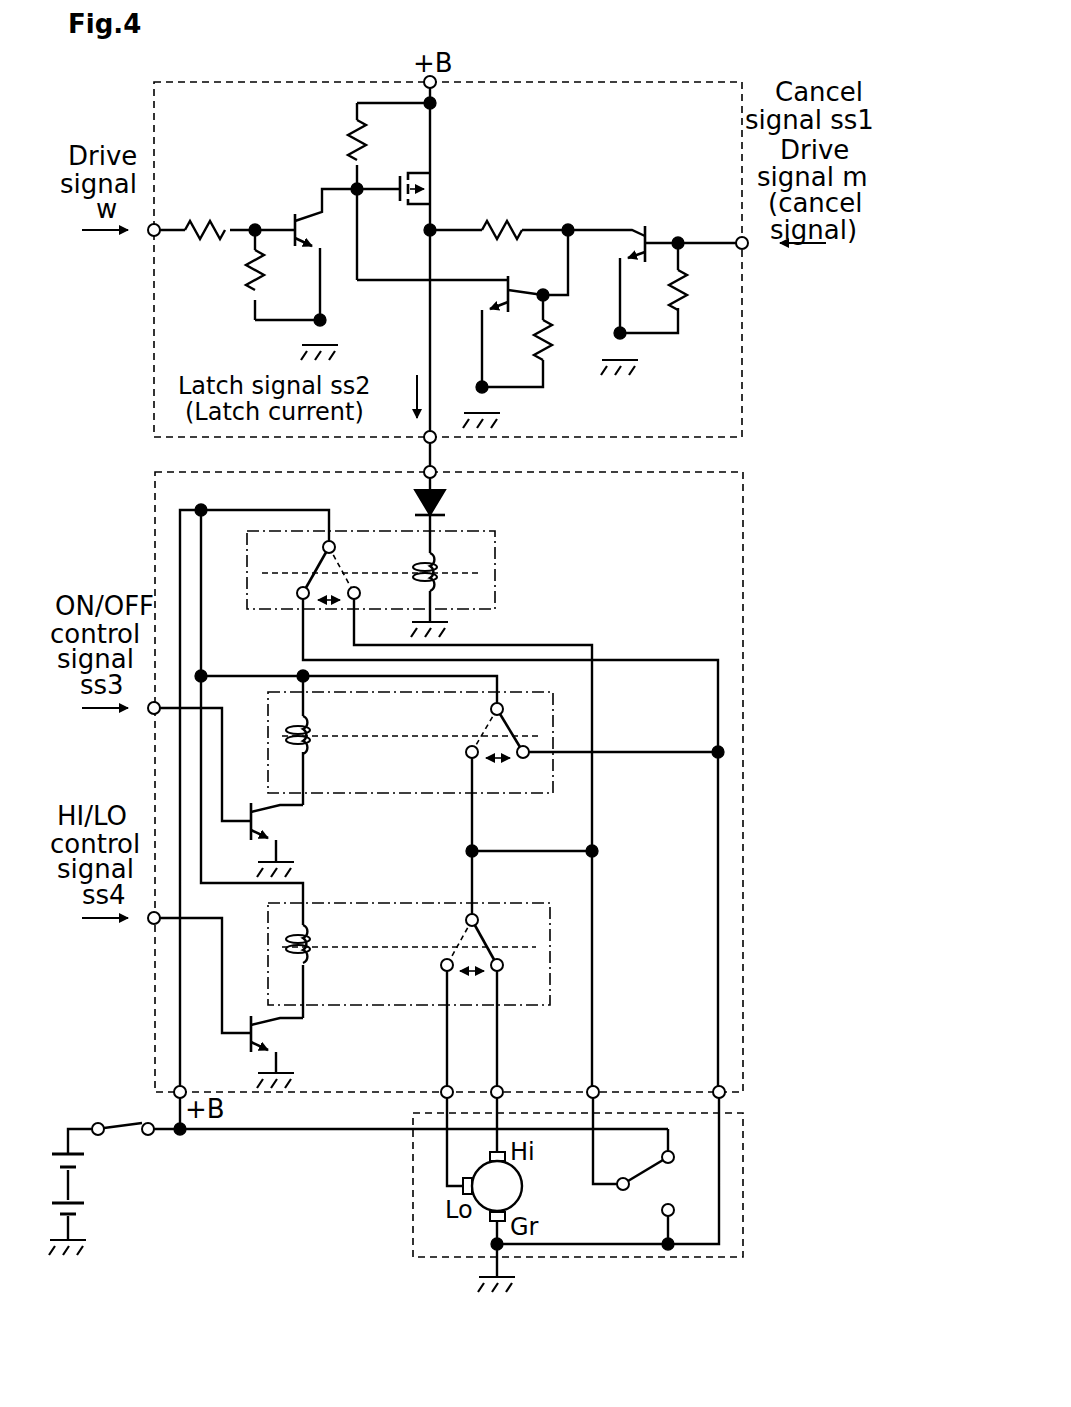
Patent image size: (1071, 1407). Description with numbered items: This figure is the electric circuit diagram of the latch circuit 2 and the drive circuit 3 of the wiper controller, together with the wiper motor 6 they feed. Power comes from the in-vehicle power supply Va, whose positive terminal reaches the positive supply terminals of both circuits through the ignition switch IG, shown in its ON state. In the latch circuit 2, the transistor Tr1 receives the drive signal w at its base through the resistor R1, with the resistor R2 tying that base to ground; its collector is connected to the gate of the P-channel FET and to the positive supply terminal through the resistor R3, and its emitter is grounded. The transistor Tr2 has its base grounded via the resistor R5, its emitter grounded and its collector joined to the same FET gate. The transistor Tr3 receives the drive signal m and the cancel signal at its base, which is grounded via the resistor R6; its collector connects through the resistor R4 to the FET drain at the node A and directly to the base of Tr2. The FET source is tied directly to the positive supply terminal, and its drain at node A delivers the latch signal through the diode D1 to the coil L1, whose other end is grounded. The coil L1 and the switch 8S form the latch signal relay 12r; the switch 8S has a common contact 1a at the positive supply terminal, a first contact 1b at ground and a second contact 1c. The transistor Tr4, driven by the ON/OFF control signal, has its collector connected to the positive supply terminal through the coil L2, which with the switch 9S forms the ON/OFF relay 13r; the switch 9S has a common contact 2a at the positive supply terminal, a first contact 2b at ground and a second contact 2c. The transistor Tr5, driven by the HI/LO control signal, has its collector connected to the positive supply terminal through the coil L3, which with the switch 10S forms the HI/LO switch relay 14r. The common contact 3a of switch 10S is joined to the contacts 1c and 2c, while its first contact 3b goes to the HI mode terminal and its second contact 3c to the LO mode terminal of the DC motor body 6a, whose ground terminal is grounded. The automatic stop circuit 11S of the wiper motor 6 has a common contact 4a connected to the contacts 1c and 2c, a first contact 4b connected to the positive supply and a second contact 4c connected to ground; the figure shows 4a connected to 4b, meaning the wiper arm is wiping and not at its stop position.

The latch circuit 2 is at (600, 82).
The drive circuit 3 is at (603, 472).
The wiper motor 6 is at (413, 1236).
The DC motor body 6a is at (524, 1182).
The node A is at (434, 226).
The resistor R1 is at (226, 227).
The resistor R2 is at (249, 278).
The resistor R3 is at (354, 128).
The resistor R4 is at (511, 227).
The resistor R5 is at (553, 340).
The resistor R6 is at (688, 288).
The NPN transistor Tr1 is at (286, 222).
The NPN transistor Tr2 is at (521, 286).
The NPN transistor Tr3 is at (644, 227).
The NPN transistor Tr4 is at (236, 832).
The NPN transistor Tr5 is at (236, 1044).
The P-channel MOSFET FET is at (394, 174).
The diode D1 is at (424, 505).
The coil L1 is at (437, 556).
The coil L2 is at (310, 718).
The coil L3 is at (310, 929).
The latch signal relay 12r is at (468, 531).
The ON/OFF relay 13r is at (362, 795).
The HI/LO switch relay 14r is at (350, 1006).
The switch 8S is at (297, 592).
The switch 9S is at (467, 753).
The switch 10S is at (447, 973).
The automatic stop circuit 11S is at (660, 1213).
The common contact 1a is at (312, 547).
The first contact 1b is at (286, 594).
The second contact 1c is at (371, 594).
The common contact 2a is at (479, 709).
The first contact 2b is at (521, 769).
The second contact 2c is at (457, 769).
The common contact 3a is at (454, 921).
The first contact 3b is at (514, 966).
The second contact 3c is at (429, 966).
The common contact 4a is at (621, 1200).
The first contact 4b is at (687, 1159).
The second contact 4c is at (686, 1211).
The ignition switch IG is at (150, 1136).
The in-vehicle power supply Va is at (80, 1203).